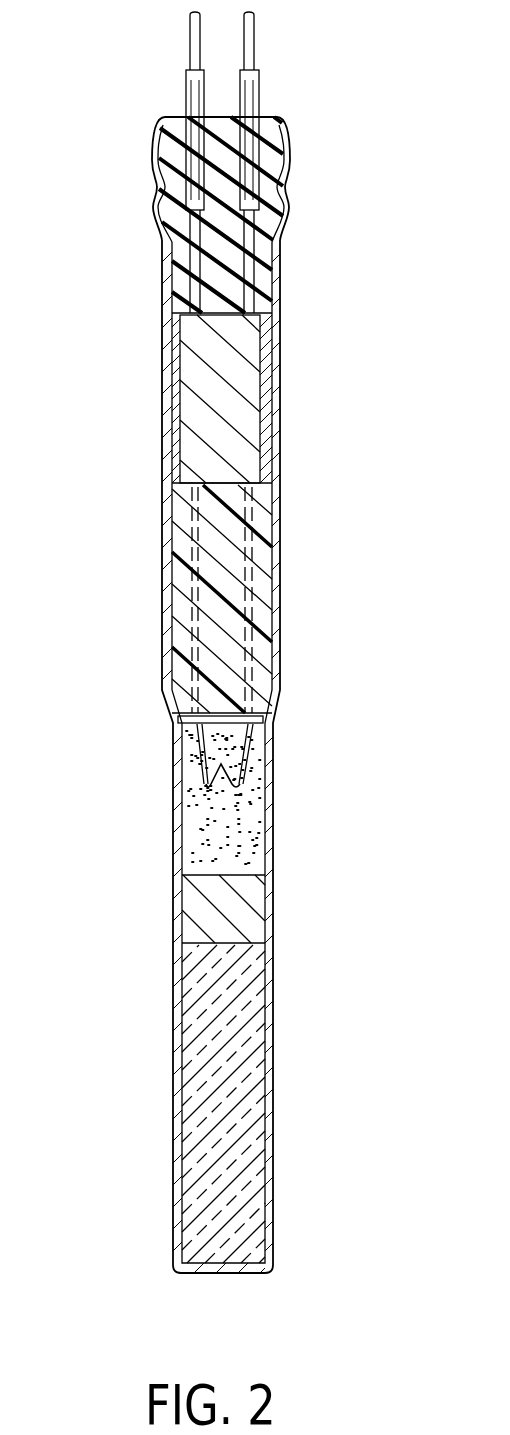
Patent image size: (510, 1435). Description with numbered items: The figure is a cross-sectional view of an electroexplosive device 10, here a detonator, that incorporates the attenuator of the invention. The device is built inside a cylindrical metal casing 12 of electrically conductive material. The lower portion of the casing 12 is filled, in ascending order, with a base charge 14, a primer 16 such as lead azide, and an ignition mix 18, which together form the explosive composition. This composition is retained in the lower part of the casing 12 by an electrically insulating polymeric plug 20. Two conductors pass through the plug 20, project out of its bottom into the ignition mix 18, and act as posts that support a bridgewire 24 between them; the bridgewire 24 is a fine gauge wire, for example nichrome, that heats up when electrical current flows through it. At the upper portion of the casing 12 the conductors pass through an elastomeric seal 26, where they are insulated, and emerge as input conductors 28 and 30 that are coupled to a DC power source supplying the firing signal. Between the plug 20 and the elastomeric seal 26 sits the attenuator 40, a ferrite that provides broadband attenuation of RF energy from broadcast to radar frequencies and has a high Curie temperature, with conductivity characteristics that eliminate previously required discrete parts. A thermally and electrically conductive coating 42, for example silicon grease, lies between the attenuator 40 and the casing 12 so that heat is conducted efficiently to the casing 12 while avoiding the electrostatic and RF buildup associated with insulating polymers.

The electroexplosive device 10 is at (384, 352).
The metal casing 12 is at (283, 433).
The base charge 14 is at (248, 1115).
The primer 16 is at (253, 902).
The ignition mix 18 is at (240, 830).
The electrically insulating polymeric plug 20 is at (263, 623).
The bridgewire 24 is at (233, 770).
The elastomeric seal 26 is at (265, 241).
The input conductor 28 is at (188, 53).
The input conductor 30 is at (253, 58).
The attenuator 40 is at (166, 426).
The thermally and electrically conductive coating 42 is at (267, 358).